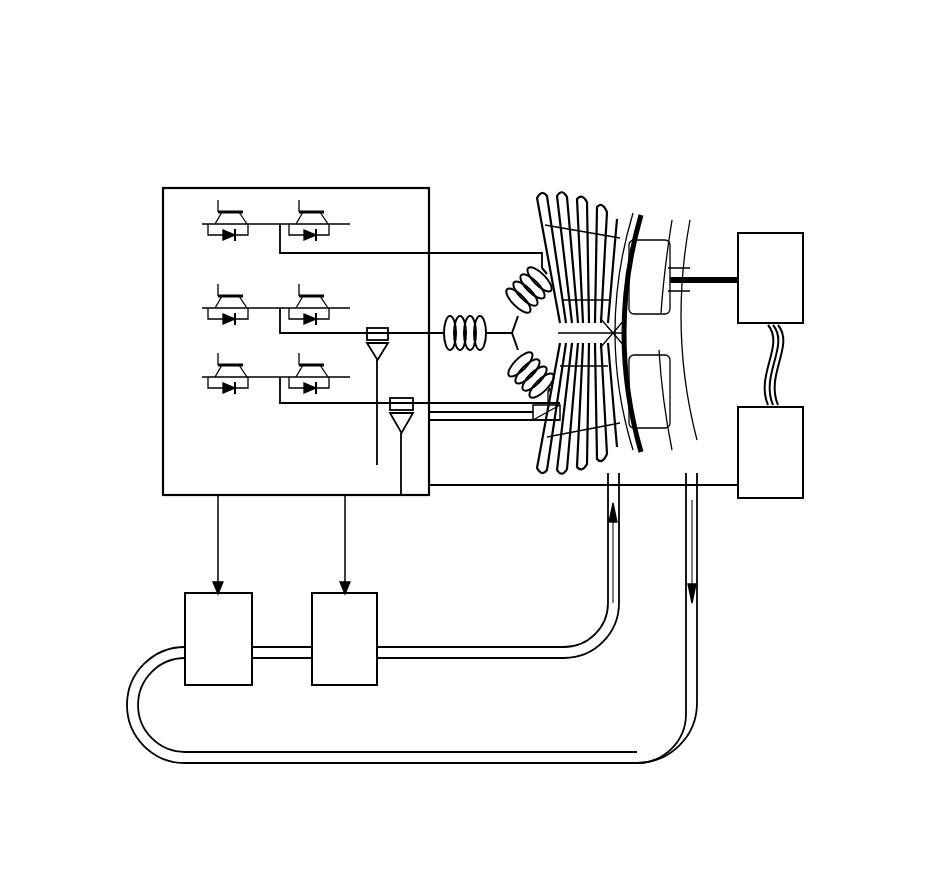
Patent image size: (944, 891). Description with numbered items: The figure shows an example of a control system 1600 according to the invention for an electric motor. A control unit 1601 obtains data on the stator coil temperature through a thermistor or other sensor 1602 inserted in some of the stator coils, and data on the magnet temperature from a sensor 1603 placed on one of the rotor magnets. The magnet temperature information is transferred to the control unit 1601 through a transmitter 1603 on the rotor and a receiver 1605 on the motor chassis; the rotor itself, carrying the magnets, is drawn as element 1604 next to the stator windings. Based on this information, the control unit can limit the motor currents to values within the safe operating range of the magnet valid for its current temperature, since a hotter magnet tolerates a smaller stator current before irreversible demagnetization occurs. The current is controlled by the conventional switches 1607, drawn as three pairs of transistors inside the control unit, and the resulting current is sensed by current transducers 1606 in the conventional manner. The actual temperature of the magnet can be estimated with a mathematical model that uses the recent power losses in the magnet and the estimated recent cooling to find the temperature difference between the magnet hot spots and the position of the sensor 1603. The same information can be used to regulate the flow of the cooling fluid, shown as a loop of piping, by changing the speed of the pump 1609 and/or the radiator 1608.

The control system 1600 is at (184, 152).
The control unit 1601 is at (163, 298).
The thermistor or other sensor 1602 is at (545, 438).
The sensor 1603 is at (780, 253).
The rotor 1604 is at (680, 267).
The receiver 1605 is at (760, 452).
The current transducers 1606 is at (407, 432).
The switches 1607 is at (232, 332).
The radiator 1608 is at (333, 637).
The pump 1609 is at (208, 637).